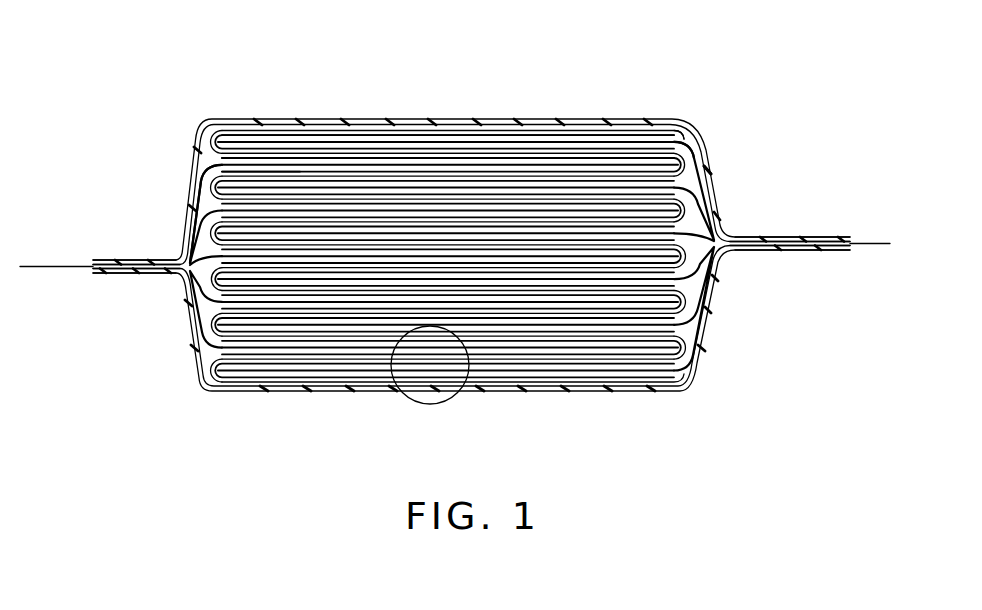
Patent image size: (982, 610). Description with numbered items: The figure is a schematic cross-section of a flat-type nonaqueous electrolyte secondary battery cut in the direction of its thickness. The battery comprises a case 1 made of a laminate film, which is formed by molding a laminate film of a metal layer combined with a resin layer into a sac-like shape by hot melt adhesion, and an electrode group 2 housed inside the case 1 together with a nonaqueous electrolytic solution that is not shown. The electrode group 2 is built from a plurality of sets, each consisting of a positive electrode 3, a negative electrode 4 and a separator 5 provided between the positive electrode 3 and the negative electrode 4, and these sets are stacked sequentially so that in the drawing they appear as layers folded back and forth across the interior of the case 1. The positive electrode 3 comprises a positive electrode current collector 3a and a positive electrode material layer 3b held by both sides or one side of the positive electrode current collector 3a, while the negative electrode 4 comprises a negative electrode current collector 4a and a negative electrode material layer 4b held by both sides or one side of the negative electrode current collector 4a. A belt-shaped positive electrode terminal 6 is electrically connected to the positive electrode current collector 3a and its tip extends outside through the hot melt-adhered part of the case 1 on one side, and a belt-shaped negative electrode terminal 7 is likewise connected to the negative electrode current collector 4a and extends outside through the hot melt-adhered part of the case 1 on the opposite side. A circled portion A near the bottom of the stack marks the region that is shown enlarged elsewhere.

The case 1 is at (479, 118).
The electrode group 2 is at (377, 70).
The positive electrode 3 is at (298, 157).
The positive electrode current collector 3a is at (212, 168).
The positive electrode material layer 3b is at (210, 160).
The negative electrode 4 is at (338, 137).
The negative electrode current collector 4a is at (688, 143).
The negative electrode material layer 4b is at (675, 137).
The separator 5 is at (360, 153).
The positive electrode terminal 6 is at (58, 258).
The negative electrode terminal 7 is at (880, 236).
The portion A is at (452, 396).